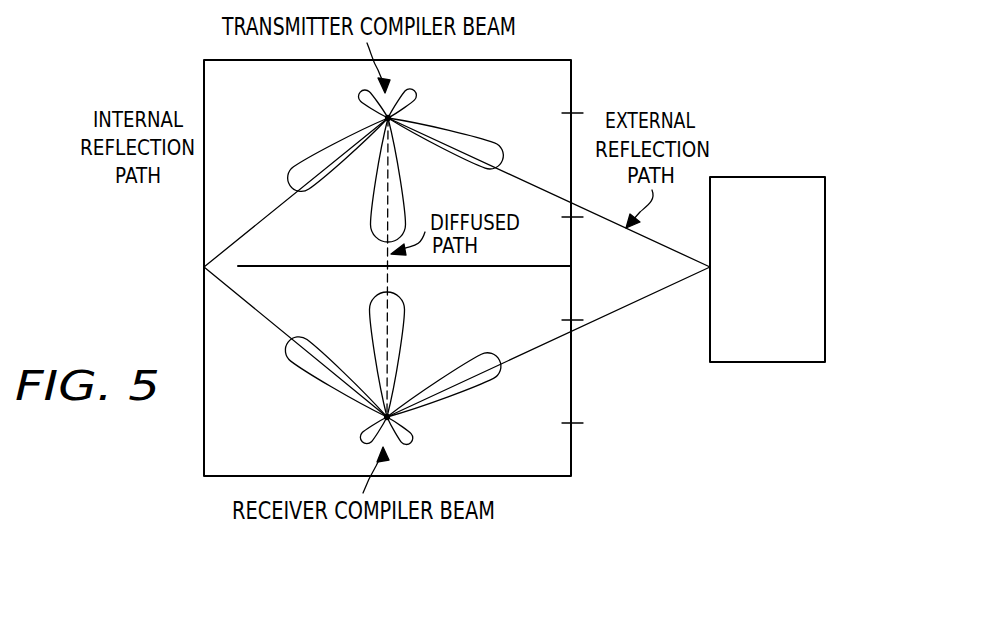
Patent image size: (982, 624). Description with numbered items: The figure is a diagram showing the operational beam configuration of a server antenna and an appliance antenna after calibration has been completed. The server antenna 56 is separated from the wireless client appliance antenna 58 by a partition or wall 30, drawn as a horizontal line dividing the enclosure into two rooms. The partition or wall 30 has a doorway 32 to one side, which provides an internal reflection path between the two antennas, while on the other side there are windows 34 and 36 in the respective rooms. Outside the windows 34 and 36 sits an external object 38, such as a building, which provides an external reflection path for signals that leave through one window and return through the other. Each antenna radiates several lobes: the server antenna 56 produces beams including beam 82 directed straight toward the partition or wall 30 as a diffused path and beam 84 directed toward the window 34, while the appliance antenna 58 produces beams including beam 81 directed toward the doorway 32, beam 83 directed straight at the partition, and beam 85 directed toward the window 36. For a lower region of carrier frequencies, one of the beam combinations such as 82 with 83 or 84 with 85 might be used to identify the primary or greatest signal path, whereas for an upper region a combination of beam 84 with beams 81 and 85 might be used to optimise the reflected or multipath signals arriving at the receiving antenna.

The partition or wall 30 is at (494, 268).
The doorway 32 is at (215, 239).
The window 34 is at (208, 93).
The window 36 is at (208, 437).
The external object 38 is at (768, 177).
The server antenna 56 is at (362, 93).
The wireless client appliance antenna 58 is at (360, 441).
The antenna beam 81 is at (308, 383).
The antenna beam 82 is at (370, 214).
The antenna beam 83 is at (407, 329).
The antenna beam 84 is at (466, 133).
The antenna beam 85 is at (465, 401).